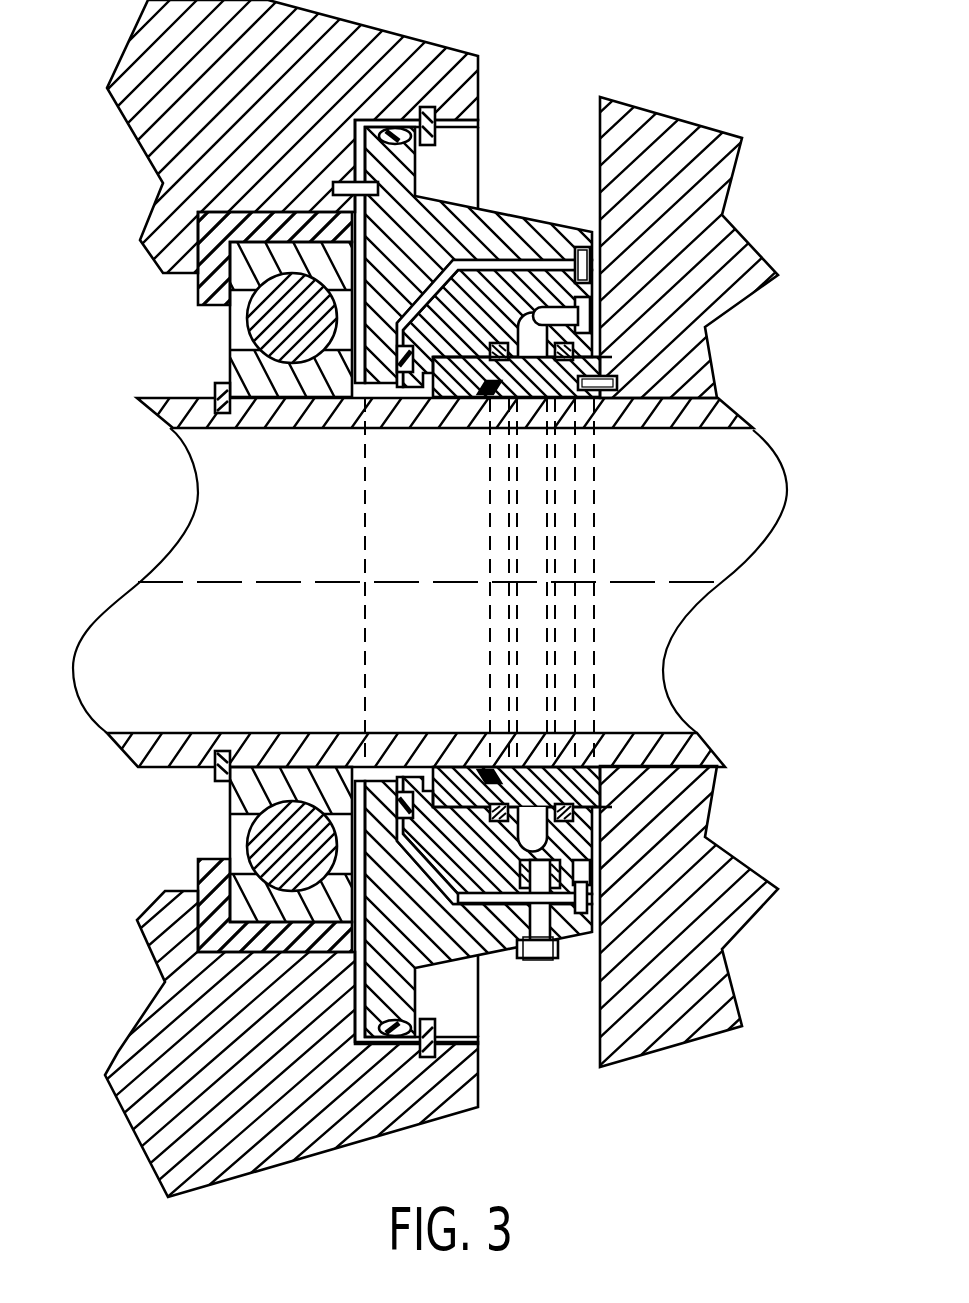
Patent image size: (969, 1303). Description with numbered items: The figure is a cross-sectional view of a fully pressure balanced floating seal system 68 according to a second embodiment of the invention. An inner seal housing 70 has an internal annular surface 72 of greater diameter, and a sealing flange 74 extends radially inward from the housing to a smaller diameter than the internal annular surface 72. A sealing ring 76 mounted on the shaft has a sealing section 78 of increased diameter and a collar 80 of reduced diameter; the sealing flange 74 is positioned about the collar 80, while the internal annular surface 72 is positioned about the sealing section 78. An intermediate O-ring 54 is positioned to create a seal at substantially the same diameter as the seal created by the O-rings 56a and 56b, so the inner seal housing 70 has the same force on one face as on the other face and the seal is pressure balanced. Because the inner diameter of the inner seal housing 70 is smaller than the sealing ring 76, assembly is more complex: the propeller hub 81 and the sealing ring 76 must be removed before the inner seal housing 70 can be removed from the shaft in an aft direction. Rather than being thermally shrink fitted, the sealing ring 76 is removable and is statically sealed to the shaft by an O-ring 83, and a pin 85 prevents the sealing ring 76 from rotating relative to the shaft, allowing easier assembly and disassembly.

The intermediate O-ring 54 is at (341, 397).
The O-ring 56a is at (513, 396).
The O-ring 56b is at (548, 396).
The fully pressure balanced floating seal system 68 is at (524, 137).
The inner seal housing 70 is at (518, 294).
The internal annular surface 72 is at (424, 398).
The sealing flange 74 is at (412, 394).
The sealing ring 76 is at (606, 358).
The sealing section 78 is at (461, 398).
The collar 80 is at (393, 384).
The propeller hub 81 is at (661, 209).
The O-ring 83 is at (474, 398).
The pin 85 is at (612, 395).